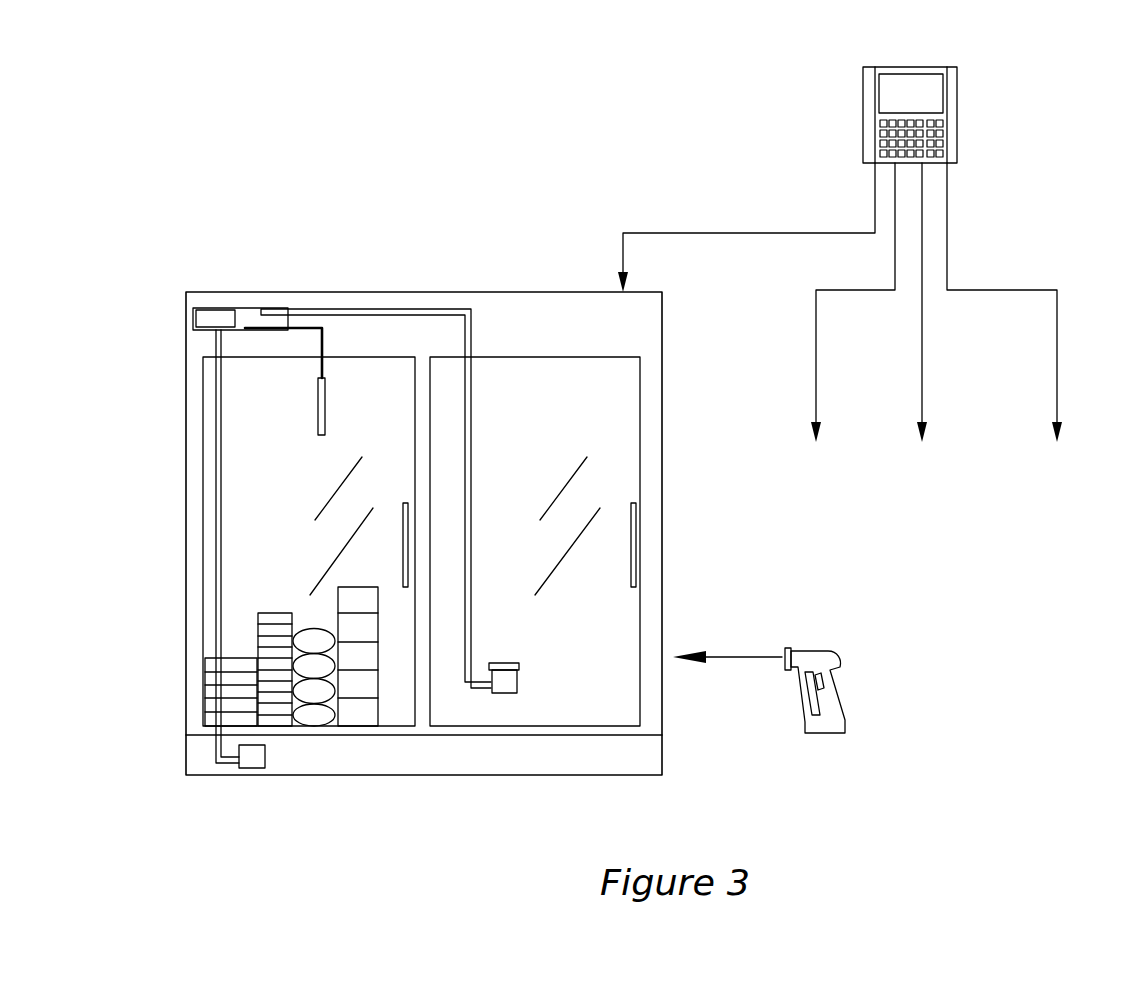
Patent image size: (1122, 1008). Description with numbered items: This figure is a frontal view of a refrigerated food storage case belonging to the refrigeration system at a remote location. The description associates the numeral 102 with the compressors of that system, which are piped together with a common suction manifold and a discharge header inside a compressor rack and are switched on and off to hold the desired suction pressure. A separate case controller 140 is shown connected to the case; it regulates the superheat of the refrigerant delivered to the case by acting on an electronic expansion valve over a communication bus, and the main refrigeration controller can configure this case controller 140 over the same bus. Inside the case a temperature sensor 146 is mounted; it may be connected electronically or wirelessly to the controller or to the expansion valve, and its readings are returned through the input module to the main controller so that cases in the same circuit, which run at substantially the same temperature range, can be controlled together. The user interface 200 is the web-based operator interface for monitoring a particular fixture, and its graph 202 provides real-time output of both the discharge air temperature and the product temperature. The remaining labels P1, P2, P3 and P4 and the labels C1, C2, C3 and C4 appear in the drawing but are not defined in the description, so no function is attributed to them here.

The compressor 102 is at (672, 543).
The case controller 140 is at (957, 105).
The temperature sensor 146 is at (318, 408).
The user interface 200 is at (838, 665).
The graph 202 is at (517, 682).
The product stack P1 is at (232, 657).
The product stack P2 is at (276, 612).
The product stack P3 is at (318, 626).
The product stack P4 is at (365, 586).
The connection C1 is at (728, 227).
The connection C2 is at (849, 326).
The connection C3 is at (923, 326).
The connection C4 is at (1008, 326).